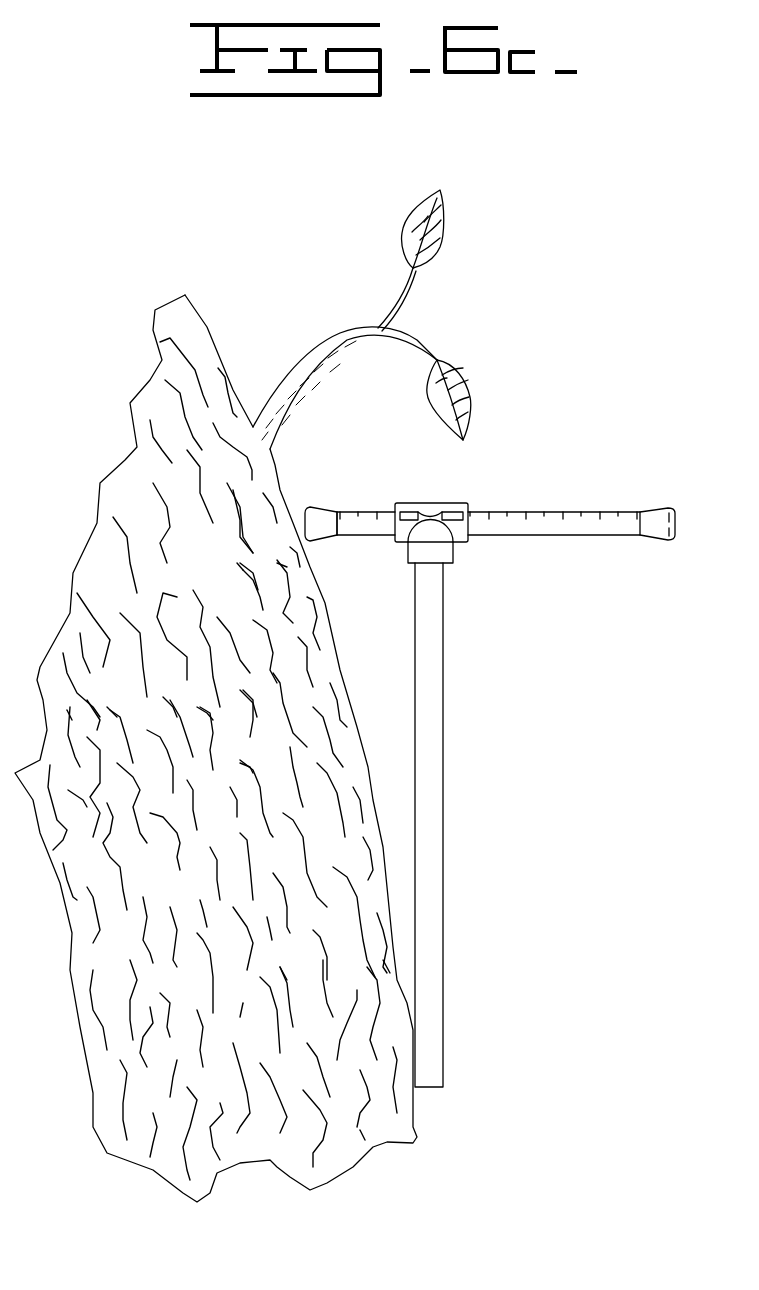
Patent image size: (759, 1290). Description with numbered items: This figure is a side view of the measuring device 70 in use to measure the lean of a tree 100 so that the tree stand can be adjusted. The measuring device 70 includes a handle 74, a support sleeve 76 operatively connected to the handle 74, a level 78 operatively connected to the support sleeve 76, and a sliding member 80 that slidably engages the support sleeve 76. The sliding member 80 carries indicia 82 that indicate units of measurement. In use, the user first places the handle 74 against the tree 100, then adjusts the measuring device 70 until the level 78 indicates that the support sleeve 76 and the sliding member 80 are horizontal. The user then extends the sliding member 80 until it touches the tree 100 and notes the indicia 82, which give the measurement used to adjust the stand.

The tree 100 is at (207, 328).
The measuring device 70 is at (494, 725).
The handle 74 is at (445, 700).
The support sleeve 76 is at (462, 505).
The level 78 is at (408, 503).
The sliding member 80 is at (628, 512).
The indicia 82 is at (351, 495).